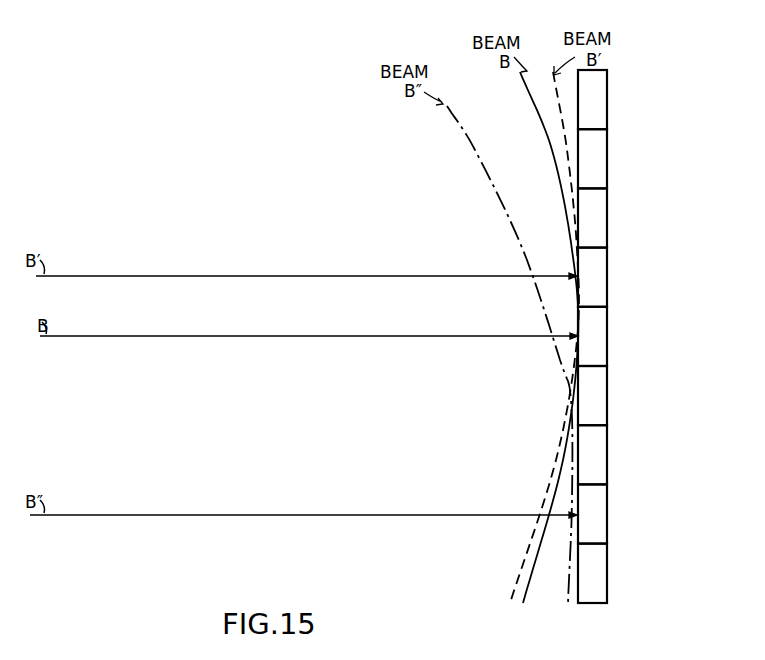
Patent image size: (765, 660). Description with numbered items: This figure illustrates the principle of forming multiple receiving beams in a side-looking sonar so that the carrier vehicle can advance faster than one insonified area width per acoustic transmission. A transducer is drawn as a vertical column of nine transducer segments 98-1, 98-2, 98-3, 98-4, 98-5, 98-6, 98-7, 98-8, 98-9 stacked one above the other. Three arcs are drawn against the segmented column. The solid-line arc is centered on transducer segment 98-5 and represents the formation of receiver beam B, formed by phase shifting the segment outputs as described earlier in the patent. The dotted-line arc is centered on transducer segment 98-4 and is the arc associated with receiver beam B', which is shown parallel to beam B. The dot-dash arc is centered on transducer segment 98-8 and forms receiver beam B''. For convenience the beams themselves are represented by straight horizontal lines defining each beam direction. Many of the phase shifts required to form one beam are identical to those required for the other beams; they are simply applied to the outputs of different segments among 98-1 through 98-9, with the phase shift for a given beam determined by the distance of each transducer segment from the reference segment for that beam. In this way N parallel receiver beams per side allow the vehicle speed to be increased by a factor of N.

The transducer segment 98-1 is at (607, 104).
The transducer segment 98-2 is at (607, 166).
The transducer segment 98-3 is at (607, 223).
The transducer segment 98-4 is at (607, 281).
The transducer segment 98-5 is at (607, 342).
The transducer segment 98-6 is at (607, 401).
The transducer segment 98-7 is at (607, 464).
The transducer segment 98-8 is at (607, 524).
The transducer segment 98-9 is at (607, 580).